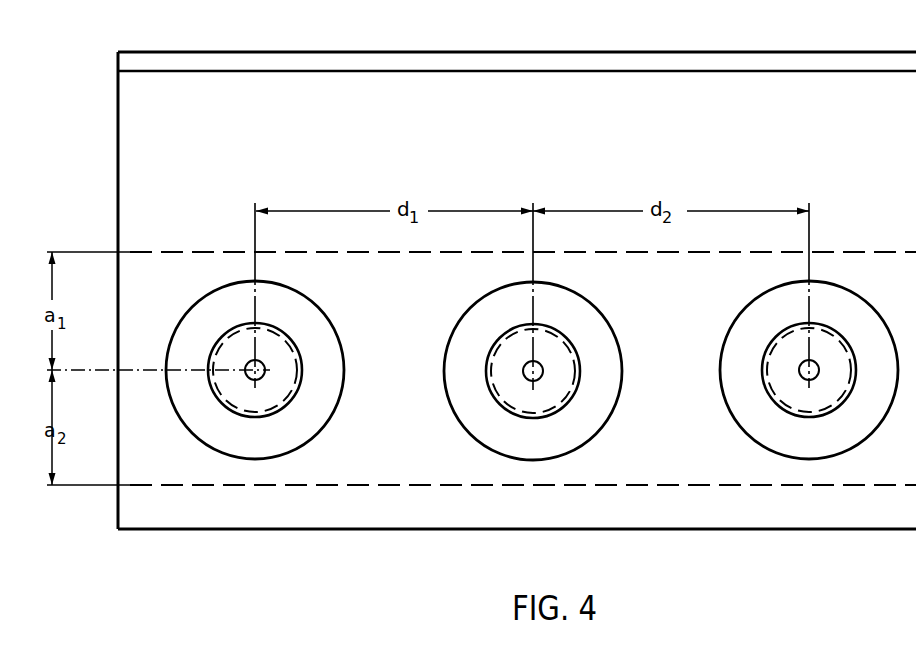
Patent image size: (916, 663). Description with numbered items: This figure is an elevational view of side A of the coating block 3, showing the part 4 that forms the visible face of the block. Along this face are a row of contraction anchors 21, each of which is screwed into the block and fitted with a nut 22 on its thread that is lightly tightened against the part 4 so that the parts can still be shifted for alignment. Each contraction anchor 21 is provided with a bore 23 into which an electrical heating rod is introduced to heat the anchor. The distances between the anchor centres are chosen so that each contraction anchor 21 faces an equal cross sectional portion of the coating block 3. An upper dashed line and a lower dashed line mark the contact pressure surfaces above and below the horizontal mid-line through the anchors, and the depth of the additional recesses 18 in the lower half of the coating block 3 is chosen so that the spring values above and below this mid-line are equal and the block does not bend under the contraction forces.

The coating block 3 is at (308, 47).
The part 4 is at (126, 179).
The additional recess 18 is at (105, 509).
The contraction anchor 21 is at (282, 377).
The nut 22 is at (304, 427).
The bore 23 is at (264, 364).